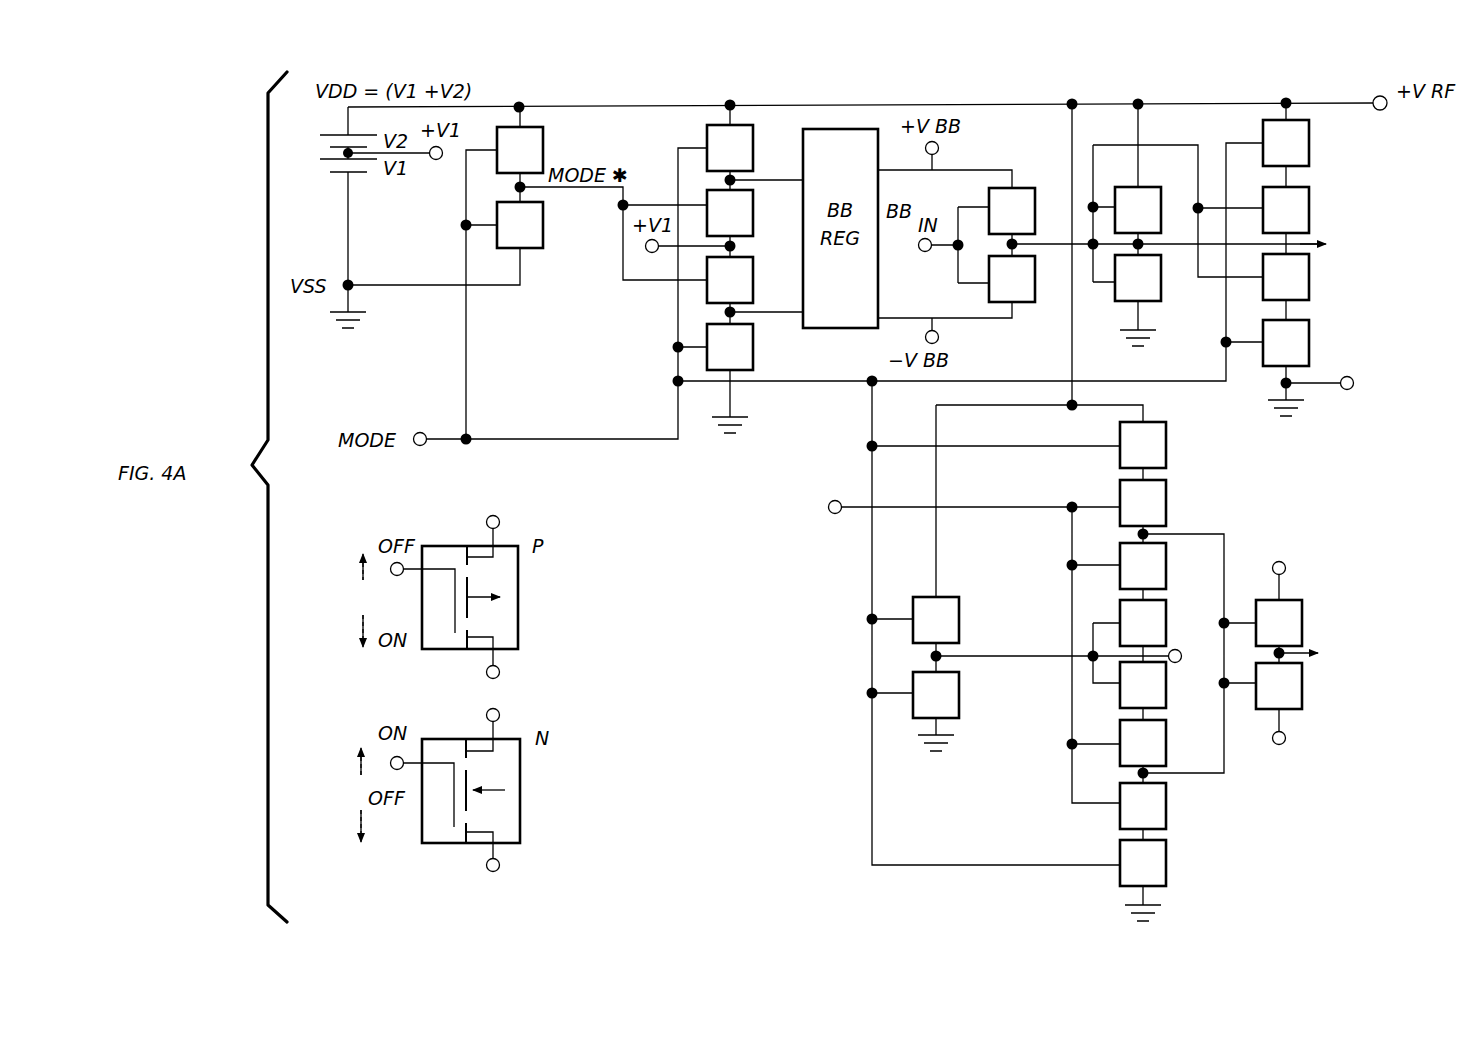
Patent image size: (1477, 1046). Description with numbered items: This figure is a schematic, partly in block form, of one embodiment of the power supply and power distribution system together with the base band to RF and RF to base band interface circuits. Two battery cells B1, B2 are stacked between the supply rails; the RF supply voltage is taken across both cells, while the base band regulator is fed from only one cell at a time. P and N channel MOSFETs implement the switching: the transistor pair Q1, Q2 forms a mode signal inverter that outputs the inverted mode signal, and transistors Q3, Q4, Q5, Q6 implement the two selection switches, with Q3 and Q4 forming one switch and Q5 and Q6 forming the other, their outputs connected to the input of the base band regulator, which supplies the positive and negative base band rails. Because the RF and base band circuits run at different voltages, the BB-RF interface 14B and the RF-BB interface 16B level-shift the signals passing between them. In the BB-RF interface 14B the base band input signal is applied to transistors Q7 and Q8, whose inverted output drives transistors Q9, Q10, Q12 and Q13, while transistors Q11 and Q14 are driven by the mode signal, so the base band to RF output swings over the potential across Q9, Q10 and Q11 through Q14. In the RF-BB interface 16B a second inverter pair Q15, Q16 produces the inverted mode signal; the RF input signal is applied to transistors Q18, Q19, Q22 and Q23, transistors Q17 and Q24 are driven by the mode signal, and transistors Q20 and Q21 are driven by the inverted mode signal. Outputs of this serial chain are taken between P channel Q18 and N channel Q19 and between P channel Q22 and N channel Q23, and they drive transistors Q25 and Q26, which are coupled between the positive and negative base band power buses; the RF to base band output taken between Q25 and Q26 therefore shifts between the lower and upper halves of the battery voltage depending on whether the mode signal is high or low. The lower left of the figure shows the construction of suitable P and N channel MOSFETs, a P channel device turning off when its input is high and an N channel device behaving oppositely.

The BB-RF interface 14B is at (1318, 95).
The RF-BB interface 16B is at (787, 893).
The battery cell B1 is at (330, 233).
The battery cell B2 is at (330, 133).
The P channel MOSFET Q1 is at (536, 146).
The N channel MOSFET Q2 is at (536, 233).
The P channel MOSFET Q3 is at (746, 144).
The P channel MOSFET Q4 is at (746, 214).
The N channel MOSFET Q5 is at (746, 280).
The N channel MOSFET Q6 is at (746, 348).
The P channel MOSFET Q7 is at (1025, 199).
The N channel MOSFET Q8 is at (1025, 290).
The P channel MOSFET Q9 is at (1152, 199).
The N channel MOSFET Q10 is at (1158, 289).
The P channel MOSFET Q11 is at (1310, 142).
The P channel MOSFET Q12 is at (1310, 209).
The N channel MOSFET Q13 is at (1310, 279).
The N channel MOSFET Q14 is at (1310, 345).
The P channel MOSFET Q15 is at (960, 616).
The N channel MOSFET Q16 is at (960, 695).
The P channel MOSFET Q17 is at (1165, 443).
The P channel MOSFET Q18 is at (1165, 502).
The N channel MOSFET Q19 is at (1165, 564).
The N channel MOSFET Q20 is at (1165, 623).
The P channel MOSFET Q21 is at (1165, 687).
The P channel MOSFET Q22 is at (1165, 745).
The N channel MOSFET Q23 is at (1165, 807).
The N channel MOSFET Q24 is at (1165, 865).
The P channel MOSFET Q25 is at (1301, 617).
The N channel MOSFET Q26 is at (1301, 693).